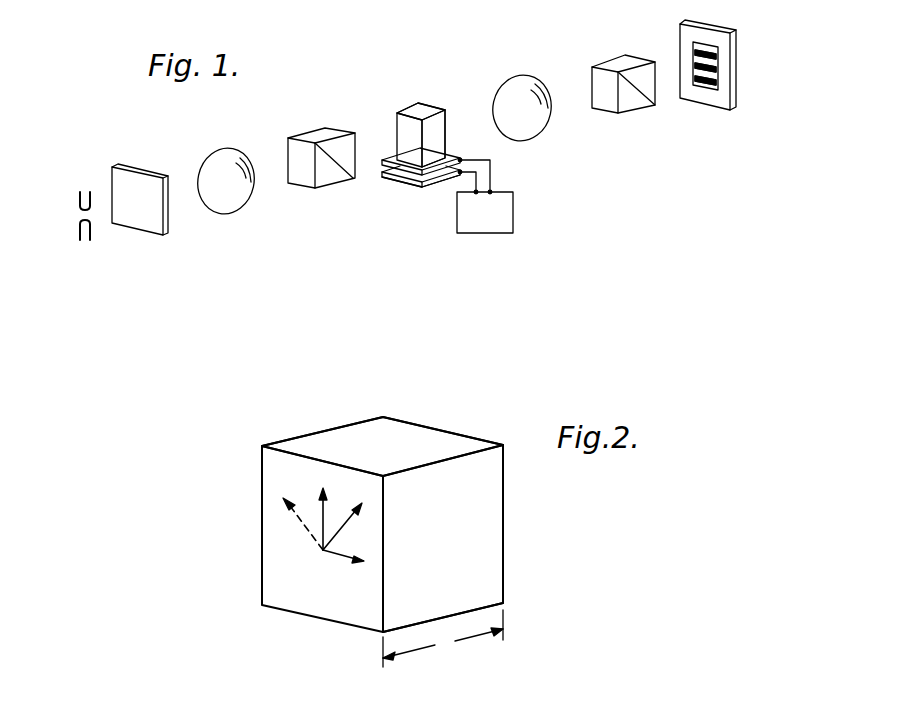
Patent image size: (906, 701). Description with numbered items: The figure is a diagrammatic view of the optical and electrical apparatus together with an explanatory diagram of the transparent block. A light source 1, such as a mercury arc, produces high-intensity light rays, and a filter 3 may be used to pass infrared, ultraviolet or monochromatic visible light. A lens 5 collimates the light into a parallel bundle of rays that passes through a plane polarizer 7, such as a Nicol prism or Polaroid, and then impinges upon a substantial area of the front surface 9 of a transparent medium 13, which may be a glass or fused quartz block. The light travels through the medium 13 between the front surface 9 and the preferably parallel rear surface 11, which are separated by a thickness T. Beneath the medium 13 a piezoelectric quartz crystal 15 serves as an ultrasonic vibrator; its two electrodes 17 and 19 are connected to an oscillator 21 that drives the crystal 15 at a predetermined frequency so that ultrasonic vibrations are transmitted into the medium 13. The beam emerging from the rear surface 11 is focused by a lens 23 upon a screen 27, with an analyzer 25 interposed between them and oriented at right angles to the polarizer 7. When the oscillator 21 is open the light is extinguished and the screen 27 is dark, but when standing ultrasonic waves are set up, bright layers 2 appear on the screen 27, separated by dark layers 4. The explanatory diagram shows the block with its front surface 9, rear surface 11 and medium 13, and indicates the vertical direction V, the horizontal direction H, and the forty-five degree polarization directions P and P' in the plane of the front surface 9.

In FIG. 1, the light source 1 is at (80, 201).
In FIG. 1, the bright layers 2 is at (716, 53).
In FIG. 1, the filter 3 is at (163, 235).
In FIG. 1, the dark layers 4 is at (695, 78).
In FIG. 1, the lens 5 is at (245, 207).
In FIG. 1, the plane polarizer 7 is at (340, 185).
In FIG. 1, the front surface 9 is at (398, 126).
In FIG. 2, the front surface 9 is at (268, 543).
In FIG. 1, the rear surface 11 is at (446, 127).
In FIG. 2, the rear surface 11 is at (507, 533).
In FIG. 1, the transparent medium 13 is at (414, 108).
In FIG. 2, the transparent medium 13 is at (347, 438).
In FIG. 1, the piezoelectric crystal 15 is at (398, 178).
In FIG. 1, the electrode 17 is at (468, 149).
In FIG. 1, the electrode 19 is at (444, 182).
In FIG. 1, the oscillator 21 is at (485, 195).
In FIG. 1, the lens 23 is at (539, 136).
In FIG. 1, the analyzer 25 is at (636, 112).
In FIG. 1, the screen 27 is at (713, 108).